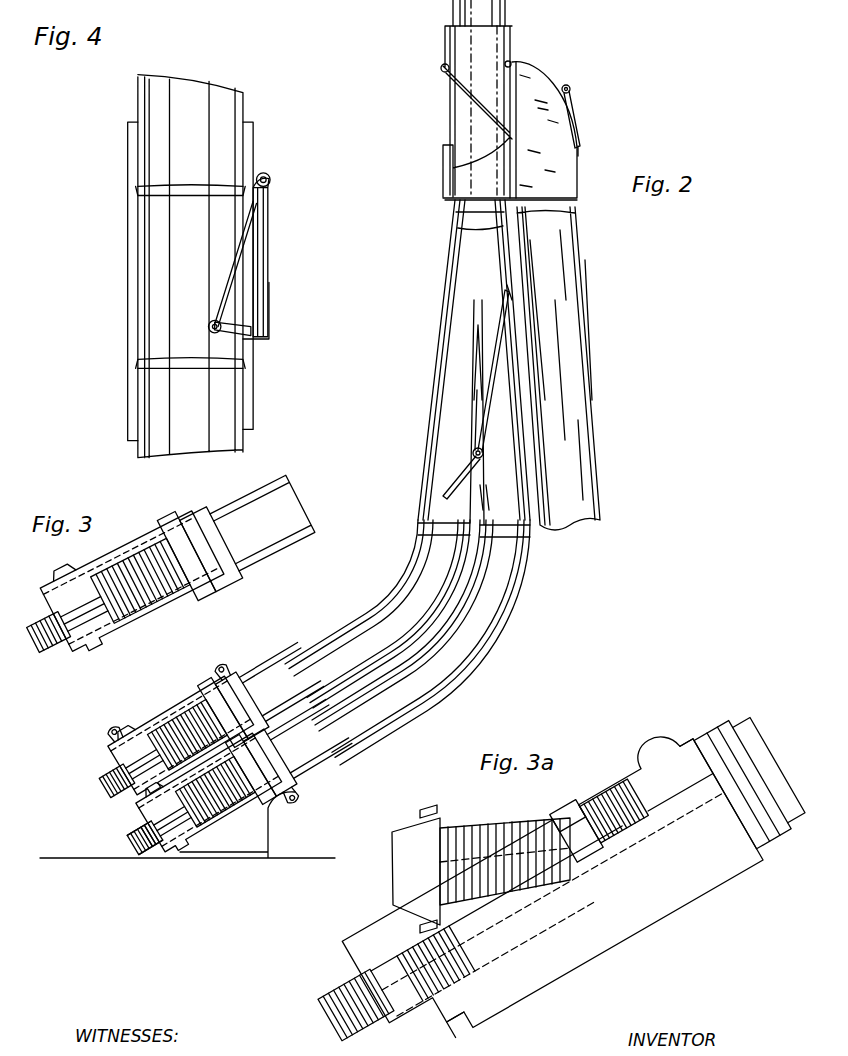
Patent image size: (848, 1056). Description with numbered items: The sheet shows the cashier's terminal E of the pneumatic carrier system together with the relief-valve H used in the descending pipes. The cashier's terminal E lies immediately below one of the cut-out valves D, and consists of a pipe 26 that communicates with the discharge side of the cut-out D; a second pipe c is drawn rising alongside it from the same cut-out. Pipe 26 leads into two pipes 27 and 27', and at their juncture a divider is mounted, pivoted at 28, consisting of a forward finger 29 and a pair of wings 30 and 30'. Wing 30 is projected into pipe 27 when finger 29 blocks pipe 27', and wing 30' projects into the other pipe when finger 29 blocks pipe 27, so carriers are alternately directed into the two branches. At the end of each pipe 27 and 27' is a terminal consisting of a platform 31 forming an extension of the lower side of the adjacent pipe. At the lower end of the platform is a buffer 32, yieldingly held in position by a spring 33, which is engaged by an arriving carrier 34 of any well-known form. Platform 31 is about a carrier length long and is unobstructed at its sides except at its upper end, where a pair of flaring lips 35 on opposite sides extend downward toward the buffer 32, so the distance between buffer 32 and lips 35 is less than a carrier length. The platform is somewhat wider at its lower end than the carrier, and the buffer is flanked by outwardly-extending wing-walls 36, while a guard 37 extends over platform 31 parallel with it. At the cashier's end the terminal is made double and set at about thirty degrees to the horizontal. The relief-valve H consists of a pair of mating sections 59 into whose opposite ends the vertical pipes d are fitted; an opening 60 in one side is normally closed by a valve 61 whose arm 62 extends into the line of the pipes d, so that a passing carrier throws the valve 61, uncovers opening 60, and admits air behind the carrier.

In FIG. 2, the pipe 26 is at (458, 213).
In FIG. 2, the pipe 27 is at (377, 575).
In FIG. 2, the pipe 27' is at (421, 633).
In FIG. 2, the pivot 28 is at (474, 451).
In FIG. 2, the forward finger 29 is at (503, 322).
In FIG. 2, the wing 30 is at (432, 477).
In FIG. 2, the wing 30' is at (528, 522).
In FIG. 2, the platform 31 is at (277, 816).
In FIG. 3, the platform 31 is at (137, 608).
In FIG. 3A, the platform 31 is at (560, 948).
In FIG. 2, the buffer 32 is at (124, 758).
In FIG. 3, the buffer 32 is at (62, 597).
In FIG. 3A, the buffer 32 is at (385, 957).
In FIG. 2, the spring 33 is at (150, 830).
In FIG. 2, the carrier 34 is at (192, 730).
In FIG. 3, the carrier 34 is at (158, 598).
In FIG. 3A, the carrier 34 is at (472, 850).
In FIG. 2, the flaring lips 35 is at (232, 690).
In FIG. 3, the flaring lips 35 is at (158, 532).
In FIG. 3A, the flaring lips 35 is at (572, 812).
In FIG. 2, the wing-walls 36 is at (152, 742).
In FIG. 3, the wing-walls 36 is at (97, 648).
In FIG. 3A, the wing-walls 36 is at (392, 928).
In FIG. 2, the guard 37 is at (172, 712).
In FIG. 3, the guard 37 is at (107, 592).
In FIG. 3A, the guard 37 is at (472, 905).
In FIG. 4, the mating sections 59 is at (116, 134).
In FIG. 4, the opening 60 is at (220, 193).
In FIG. 4, the valve 61 is at (285, 255).
In FIG. 4, the arm 62 is at (253, 344).
In FIG. 2, the tube c is at (558, 368).
In FIG. 4, the vertical pipe d is at (124, 76).
In FIG. 2, the vertical pipe d is at (453, 22).
In FIG. 2, the cut-out valve D is at (560, 168).
In FIG. 2, the cashier's terminal E is at (235, 682).
In FIG. 3, the cashier's terminal E is at (223, 529).
In FIG. 3A, the cashier's terminal E is at (655, 772).
In FIG. 4, the relief-valve H is at (219, 127).